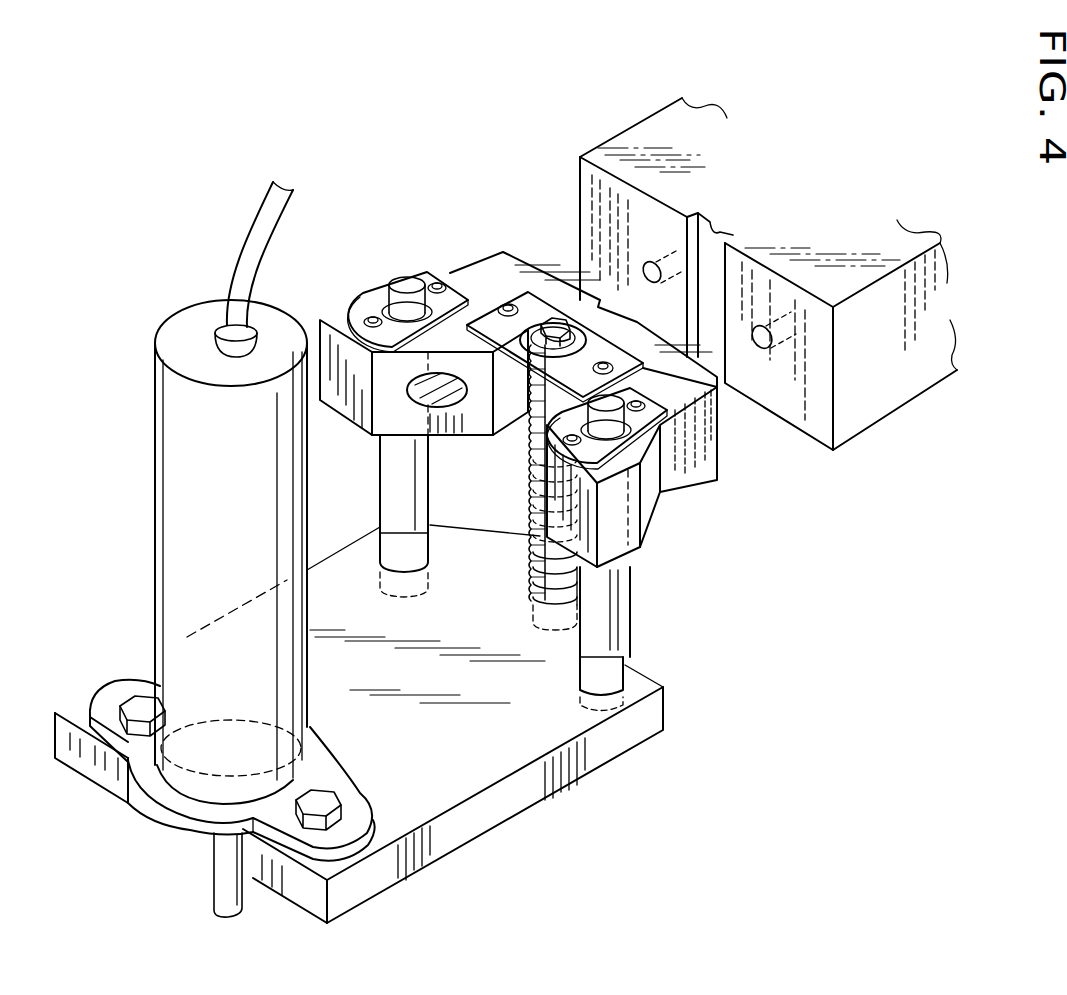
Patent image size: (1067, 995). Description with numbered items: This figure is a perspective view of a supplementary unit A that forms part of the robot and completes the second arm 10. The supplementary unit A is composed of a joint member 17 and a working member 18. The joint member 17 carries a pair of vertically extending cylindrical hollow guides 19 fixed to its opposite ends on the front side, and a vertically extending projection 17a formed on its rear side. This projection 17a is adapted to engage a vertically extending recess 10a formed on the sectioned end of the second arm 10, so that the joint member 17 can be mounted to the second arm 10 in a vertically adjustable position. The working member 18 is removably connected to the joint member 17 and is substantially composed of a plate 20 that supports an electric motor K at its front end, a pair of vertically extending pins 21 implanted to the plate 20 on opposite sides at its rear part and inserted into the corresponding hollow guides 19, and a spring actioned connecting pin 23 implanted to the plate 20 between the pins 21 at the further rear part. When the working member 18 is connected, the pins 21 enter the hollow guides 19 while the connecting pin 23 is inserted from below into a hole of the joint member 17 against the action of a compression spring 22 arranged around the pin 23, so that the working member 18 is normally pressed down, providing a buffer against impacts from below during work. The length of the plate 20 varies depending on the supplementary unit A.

The electric motor K is at (175, 525).
The second arm 10 is at (893, 375).
The recess 10a is at (725, 227).
The joint member 17 is at (702, 488).
The projection 17a is at (613, 300).
The working member 18 is at (597, 770).
The cylindrical hollow guides 19 is at (393, 474).
The plate 20 is at (500, 803).
The pins 21 is at (390, 553).
The compression spring 22 is at (533, 462).
The spring actioned connecting pin 23 is at (543, 555).
The supplementary unit A is at (457, 837).